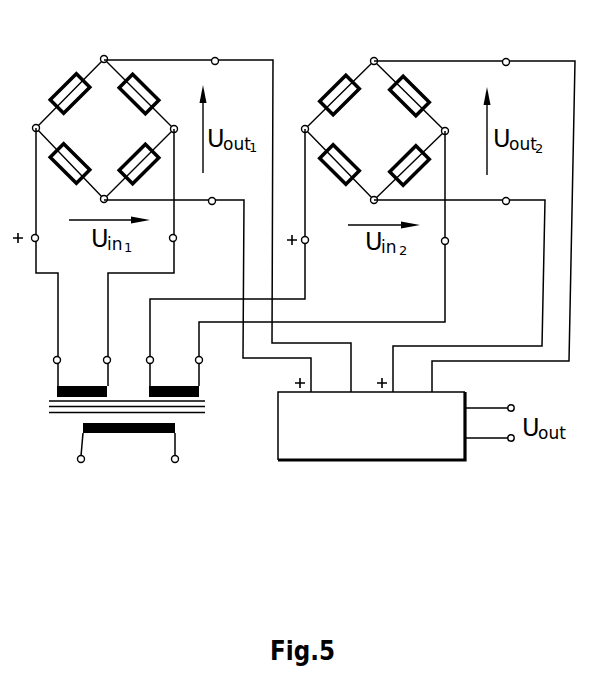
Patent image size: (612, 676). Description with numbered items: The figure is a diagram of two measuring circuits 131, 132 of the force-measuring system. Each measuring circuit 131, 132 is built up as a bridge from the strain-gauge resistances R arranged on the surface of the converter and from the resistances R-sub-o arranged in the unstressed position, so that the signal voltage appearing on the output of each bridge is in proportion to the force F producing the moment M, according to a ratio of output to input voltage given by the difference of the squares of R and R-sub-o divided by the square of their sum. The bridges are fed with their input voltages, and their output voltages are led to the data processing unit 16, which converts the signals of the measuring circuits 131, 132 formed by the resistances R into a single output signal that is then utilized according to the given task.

The measuring circuit 131 is at (98, 85).
The measuring circuit 132 is at (377, 87).
The data processing unit 16 is at (318, 445).